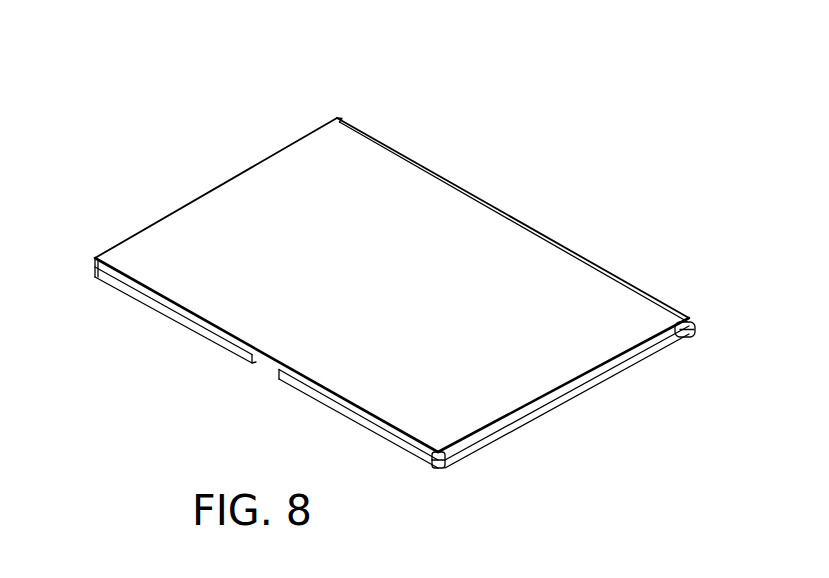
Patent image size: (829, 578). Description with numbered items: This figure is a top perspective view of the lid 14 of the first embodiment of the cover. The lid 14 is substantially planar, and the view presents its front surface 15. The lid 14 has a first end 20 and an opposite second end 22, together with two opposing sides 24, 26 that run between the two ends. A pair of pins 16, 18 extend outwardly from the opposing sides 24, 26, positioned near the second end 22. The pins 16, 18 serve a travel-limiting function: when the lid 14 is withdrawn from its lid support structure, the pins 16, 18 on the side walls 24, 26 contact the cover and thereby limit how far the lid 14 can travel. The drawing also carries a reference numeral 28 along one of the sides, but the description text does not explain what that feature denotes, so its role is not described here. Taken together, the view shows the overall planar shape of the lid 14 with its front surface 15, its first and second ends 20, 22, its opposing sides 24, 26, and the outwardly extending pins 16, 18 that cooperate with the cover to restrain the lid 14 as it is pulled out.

The lid 14 is at (509, 144).
The front surface 15 is at (372, 284).
The pin 16 is at (687, 338).
The pin 18 is at (332, 118).
The first end 20 is at (167, 321).
The second end 22 is at (553, 240).
The side 24 is at (185, 200).
The side 26 is at (485, 440).
The notch 28 is at (268, 375).